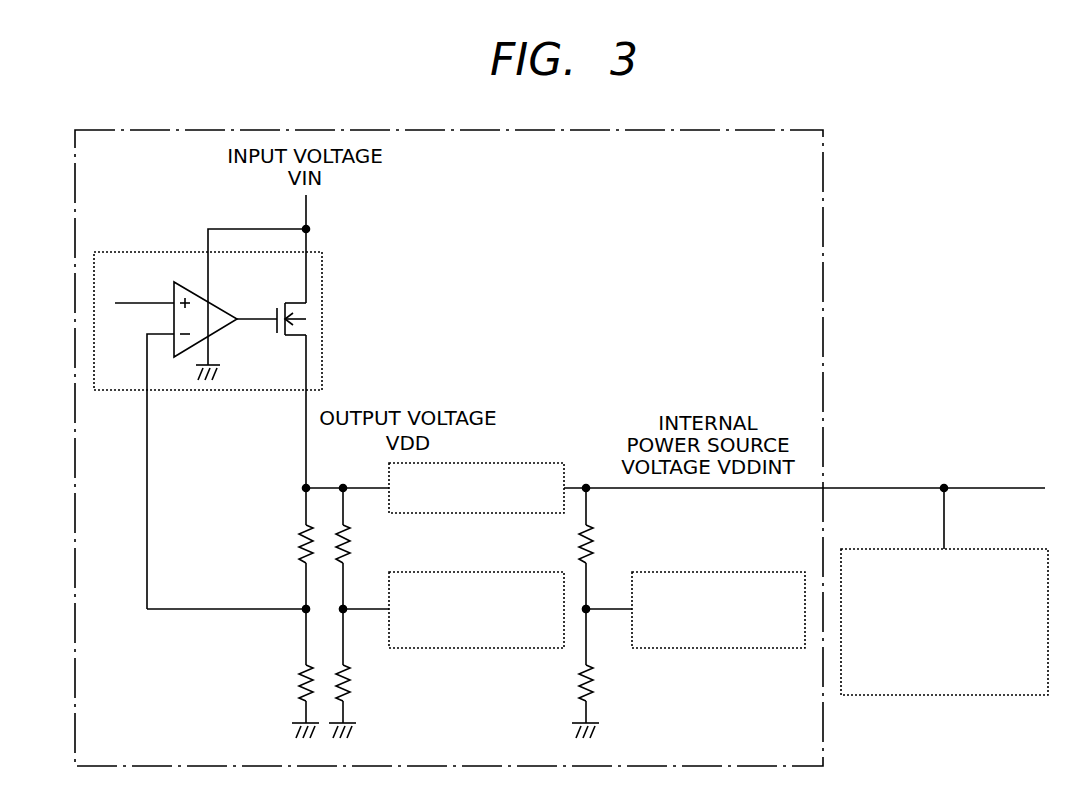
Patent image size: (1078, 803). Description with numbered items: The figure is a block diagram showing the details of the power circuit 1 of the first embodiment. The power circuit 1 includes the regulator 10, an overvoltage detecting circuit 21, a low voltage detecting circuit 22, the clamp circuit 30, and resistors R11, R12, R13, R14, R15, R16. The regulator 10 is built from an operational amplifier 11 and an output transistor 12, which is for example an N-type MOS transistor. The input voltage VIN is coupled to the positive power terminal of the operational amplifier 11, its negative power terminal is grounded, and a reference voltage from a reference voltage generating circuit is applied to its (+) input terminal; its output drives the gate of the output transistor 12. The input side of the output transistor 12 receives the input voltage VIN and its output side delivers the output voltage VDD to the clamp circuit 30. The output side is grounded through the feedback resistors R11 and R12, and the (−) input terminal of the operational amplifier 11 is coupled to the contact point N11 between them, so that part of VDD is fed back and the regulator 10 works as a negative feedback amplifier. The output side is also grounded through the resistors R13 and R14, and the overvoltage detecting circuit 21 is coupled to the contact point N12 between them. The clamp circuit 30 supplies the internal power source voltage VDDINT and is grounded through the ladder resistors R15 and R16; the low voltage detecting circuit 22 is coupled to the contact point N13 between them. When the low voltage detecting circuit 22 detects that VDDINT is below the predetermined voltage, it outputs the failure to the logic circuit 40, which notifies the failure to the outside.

The power circuit 1 is at (485, 167).
The regulator 10 is at (322, 272).
The operational amplifier 11 is at (190, 292).
The output transistor 12 is at (292, 336).
The overvoltage detecting circuit 21 is at (525, 649).
The low voltage detecting circuit 22 is at (777, 649).
The clamp circuit 30 is at (545, 463).
The logic circuit 40 is at (1000, 697).
The resistor R11 is at (285, 567).
The resistor R12 is at (286, 673).
The resistor R13 is at (366, 548).
The resistor R14 is at (362, 673).
The resistor R15 is at (609, 548).
The resistor R16 is at (605, 673).
The contact point N11 is at (300, 612).
The contact point N12 is at (348, 613).
The contact point N13 is at (590, 613).